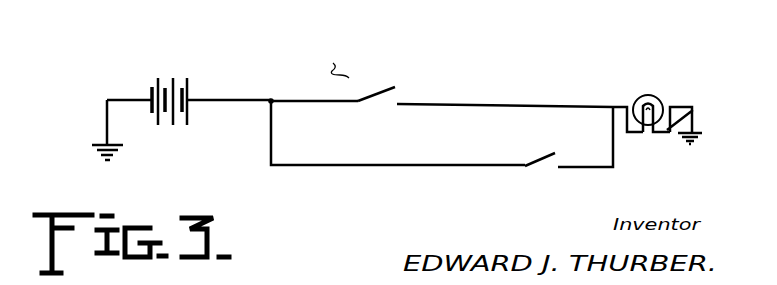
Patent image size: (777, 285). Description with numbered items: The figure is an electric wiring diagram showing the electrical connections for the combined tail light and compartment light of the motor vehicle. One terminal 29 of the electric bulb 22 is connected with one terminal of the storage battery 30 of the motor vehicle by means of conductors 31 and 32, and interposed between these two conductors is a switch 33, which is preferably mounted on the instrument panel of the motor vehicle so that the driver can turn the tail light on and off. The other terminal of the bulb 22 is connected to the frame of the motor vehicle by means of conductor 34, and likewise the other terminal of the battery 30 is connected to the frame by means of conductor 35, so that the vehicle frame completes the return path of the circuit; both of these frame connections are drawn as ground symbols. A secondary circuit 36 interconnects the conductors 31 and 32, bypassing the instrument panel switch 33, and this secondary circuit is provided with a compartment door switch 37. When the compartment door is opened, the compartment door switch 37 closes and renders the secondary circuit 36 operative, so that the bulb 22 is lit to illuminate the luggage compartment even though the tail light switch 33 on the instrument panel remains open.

The electric bulb 22 is at (658, 97).
The terminal 29 is at (624, 111).
The storage battery 30 is at (182, 85).
The conductor 31 is at (245, 99).
The conductor 32 is at (486, 103).
The switch 33 is at (377, 92).
The conductor 34 is at (668, 130).
The conductor 35 is at (127, 90).
The secondary circuit 36 is at (442, 148).
The compartment door switch 37 is at (543, 171).